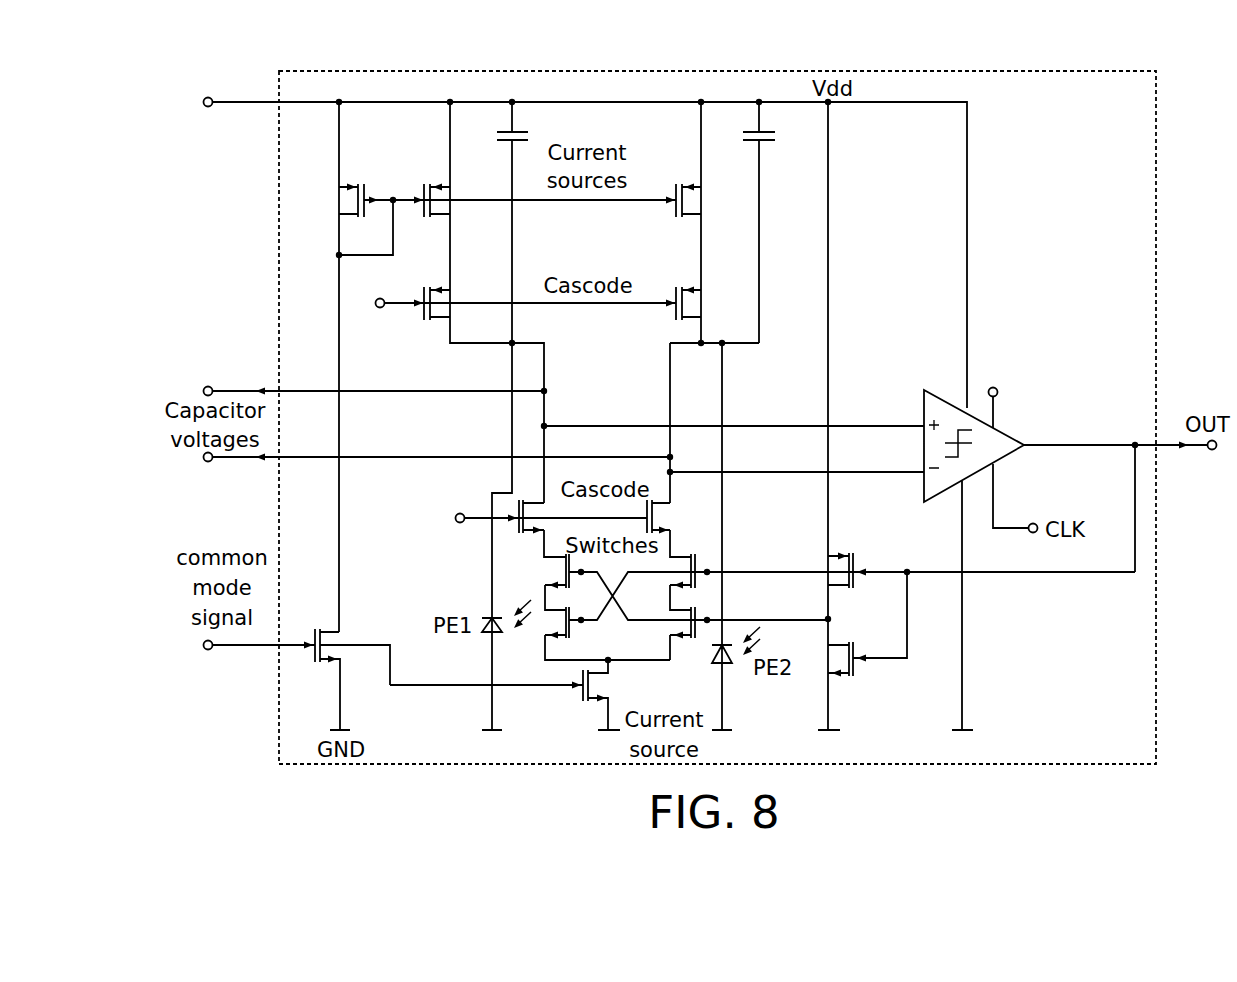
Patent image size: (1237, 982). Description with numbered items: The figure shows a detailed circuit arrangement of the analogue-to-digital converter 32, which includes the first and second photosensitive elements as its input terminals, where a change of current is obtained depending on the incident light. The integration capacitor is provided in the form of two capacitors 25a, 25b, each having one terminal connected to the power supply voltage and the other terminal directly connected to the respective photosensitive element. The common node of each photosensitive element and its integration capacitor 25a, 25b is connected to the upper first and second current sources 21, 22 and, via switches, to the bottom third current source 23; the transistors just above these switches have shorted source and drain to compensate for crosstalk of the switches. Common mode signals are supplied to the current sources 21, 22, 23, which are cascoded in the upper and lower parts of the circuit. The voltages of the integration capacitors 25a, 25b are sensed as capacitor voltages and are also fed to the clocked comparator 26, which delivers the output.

The first current source 21 is at (427, 187).
The second current source 22 is at (676, 186).
The third current source 23 is at (596, 676).
The integration capacitor 25a is at (504, 144).
The integration capacitor 25b is at (766, 143).
The comparator 26 is at (952, 400).
The analogue-to-digital converter 32 is at (1158, 174).